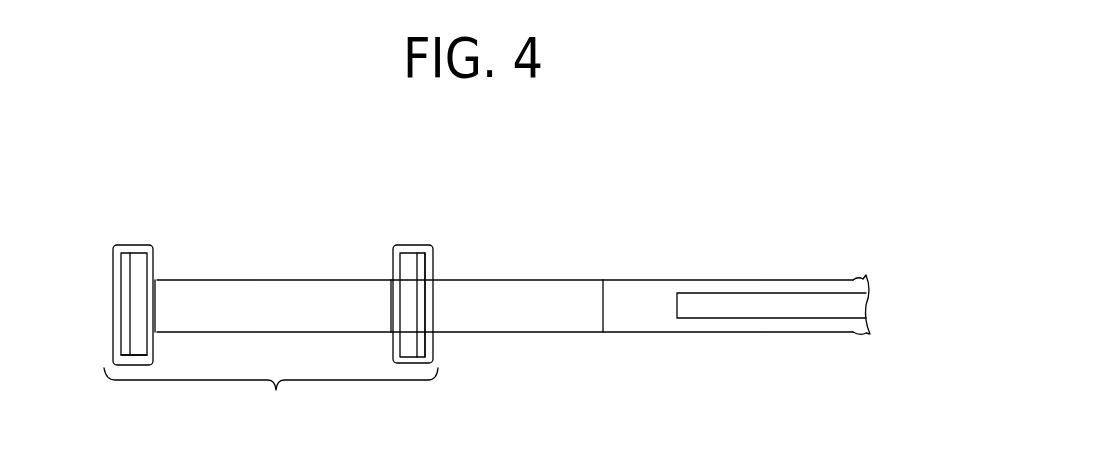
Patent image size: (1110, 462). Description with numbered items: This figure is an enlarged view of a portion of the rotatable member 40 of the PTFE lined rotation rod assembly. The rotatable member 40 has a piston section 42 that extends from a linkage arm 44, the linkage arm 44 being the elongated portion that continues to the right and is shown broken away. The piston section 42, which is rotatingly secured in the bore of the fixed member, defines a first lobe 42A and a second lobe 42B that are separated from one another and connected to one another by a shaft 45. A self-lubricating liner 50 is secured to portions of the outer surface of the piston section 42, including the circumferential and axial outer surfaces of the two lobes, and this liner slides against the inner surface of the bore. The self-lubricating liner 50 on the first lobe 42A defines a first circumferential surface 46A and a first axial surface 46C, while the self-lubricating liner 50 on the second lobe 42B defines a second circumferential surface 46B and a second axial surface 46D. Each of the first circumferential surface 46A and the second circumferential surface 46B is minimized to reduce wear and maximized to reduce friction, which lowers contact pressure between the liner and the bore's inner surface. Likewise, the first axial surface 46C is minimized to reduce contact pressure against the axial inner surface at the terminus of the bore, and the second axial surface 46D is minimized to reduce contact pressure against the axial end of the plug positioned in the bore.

The rotatable member 40 is at (549, 192).
The piston section 42 is at (275, 297).
The first lobe 42A is at (156, 264).
The second lobe 42B is at (403, 264).
The linkage arm 44 is at (590, 336).
The shaft 45 is at (281, 291).
The first circumferential surface 46A is at (145, 244).
The second circumferential surface 46B is at (407, 245).
The first axial surface 46C is at (114, 338).
The second axial surface 46D is at (435, 264).
The self-lubricating liner 50 is at (137, 243).